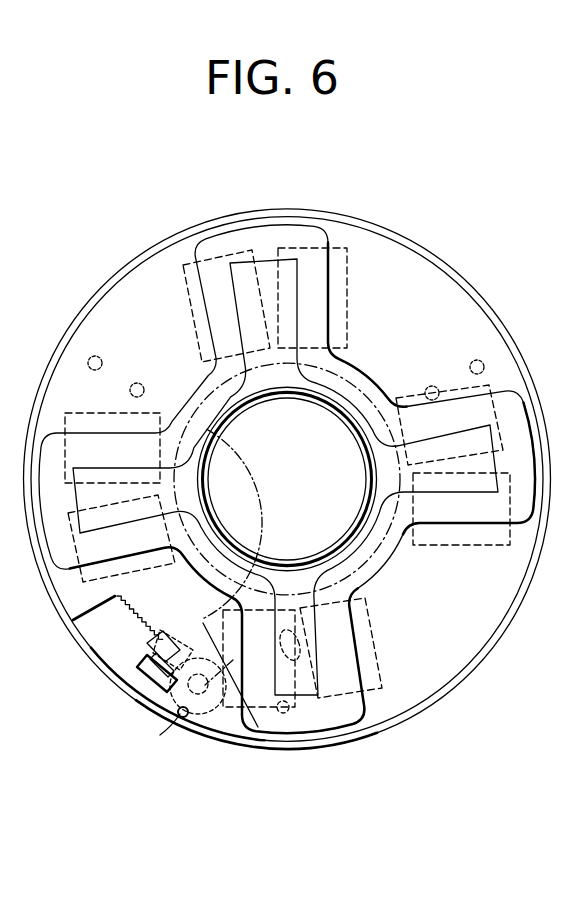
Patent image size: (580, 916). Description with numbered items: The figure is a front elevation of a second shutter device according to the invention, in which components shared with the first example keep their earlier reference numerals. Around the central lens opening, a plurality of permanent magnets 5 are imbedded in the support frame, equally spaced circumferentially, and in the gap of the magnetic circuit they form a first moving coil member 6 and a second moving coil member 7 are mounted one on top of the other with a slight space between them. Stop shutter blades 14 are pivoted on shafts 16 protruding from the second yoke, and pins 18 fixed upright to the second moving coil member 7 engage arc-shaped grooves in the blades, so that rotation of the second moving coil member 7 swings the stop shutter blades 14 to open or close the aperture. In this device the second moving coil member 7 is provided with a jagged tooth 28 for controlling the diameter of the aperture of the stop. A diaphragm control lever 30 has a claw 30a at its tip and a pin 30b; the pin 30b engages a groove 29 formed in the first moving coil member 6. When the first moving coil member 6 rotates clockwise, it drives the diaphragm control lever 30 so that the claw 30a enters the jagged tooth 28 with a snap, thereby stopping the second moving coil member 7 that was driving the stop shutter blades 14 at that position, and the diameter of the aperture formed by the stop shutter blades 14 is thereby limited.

The permanent magnets 5 is at (337, 252).
The first moving coil member 6 is at (390, 238).
The second moving coil member 7 is at (441, 290).
The stop shutter blades 14 is at (318, 697).
The shafts 16 is at (285, 713).
The pins 18 is at (297, 660).
The jagged tooth 28 is at (137, 645).
The groove 29 is at (160, 735).
The diaphragm control lever 30 is at (203, 704).
The claw 30a is at (143, 656).
The pin 30b is at (182, 719).